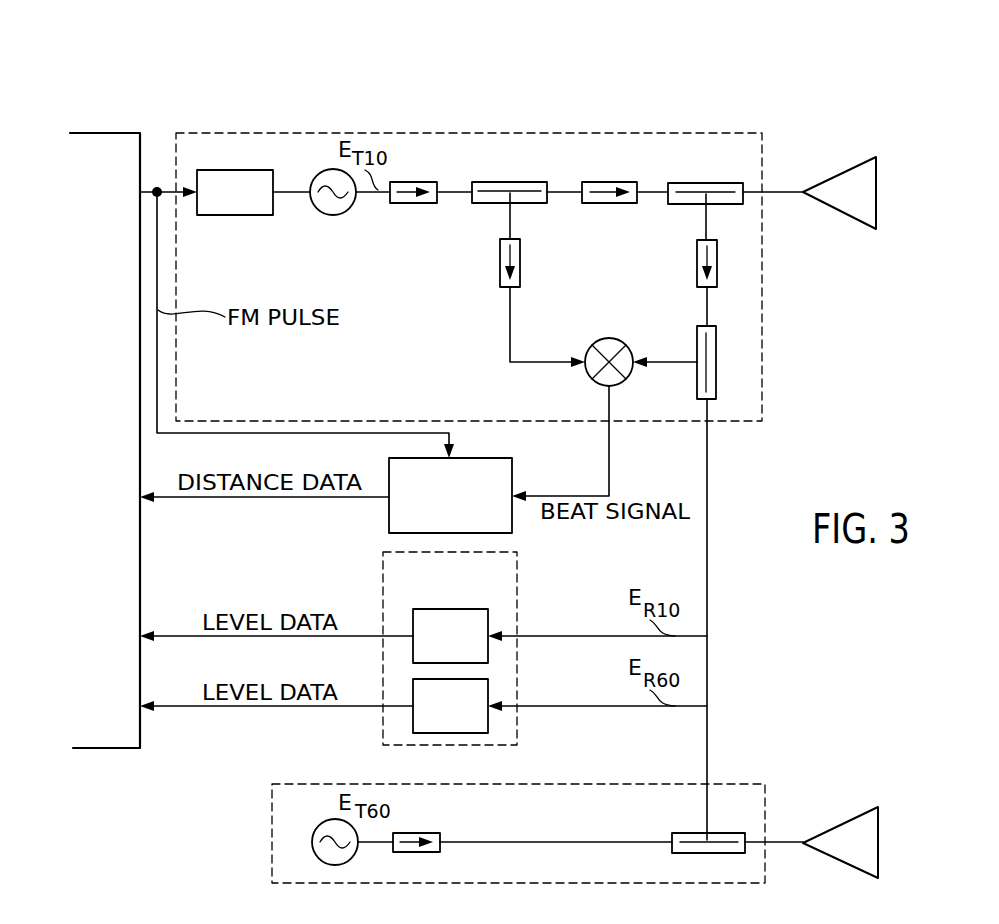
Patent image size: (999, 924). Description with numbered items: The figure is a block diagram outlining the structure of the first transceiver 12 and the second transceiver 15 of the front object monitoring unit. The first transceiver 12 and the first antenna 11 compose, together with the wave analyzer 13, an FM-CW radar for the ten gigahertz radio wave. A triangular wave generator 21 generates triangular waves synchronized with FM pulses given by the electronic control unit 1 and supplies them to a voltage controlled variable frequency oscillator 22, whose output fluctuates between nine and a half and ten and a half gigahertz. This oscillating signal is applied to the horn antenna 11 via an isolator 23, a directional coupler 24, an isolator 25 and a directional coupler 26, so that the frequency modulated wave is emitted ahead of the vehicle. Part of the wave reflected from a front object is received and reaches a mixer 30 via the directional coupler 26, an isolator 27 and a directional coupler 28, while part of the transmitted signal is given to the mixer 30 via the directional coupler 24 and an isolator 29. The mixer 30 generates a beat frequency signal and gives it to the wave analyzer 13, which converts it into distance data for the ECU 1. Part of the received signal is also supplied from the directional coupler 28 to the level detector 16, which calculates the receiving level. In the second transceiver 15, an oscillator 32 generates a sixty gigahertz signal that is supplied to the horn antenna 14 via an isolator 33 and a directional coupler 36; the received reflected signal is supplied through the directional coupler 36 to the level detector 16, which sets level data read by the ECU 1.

The electronic control unit 1 is at (103, 440).
The first antenna 11 is at (840, 172).
The first transceiver 12 is at (580, 133).
The wave analyzer 13 is at (512, 475).
The second antenna 14 is at (880, 843).
The second transceiver 15 is at (840, 750).
The level detector 16 is at (517, 607).
The triangular wave generator 21 is at (233, 175).
The voltage controlled variable frequency oscillator 22 is at (332, 216).
The isolator 23 is at (405, 204).
The directional coupler 24 is at (520, 205).
The isolator 25 is at (605, 204).
The directional coupler 26 is at (720, 206).
The isolator 27 is at (697, 252).
The directional coupler 28 is at (697, 340).
The isolator 29 is at (500, 250).
The mixer 30 is at (591, 350).
The oscillator 32 is at (317, 828).
The isolator 33 is at (440, 835).
The directional coupler 36 is at (672, 835).